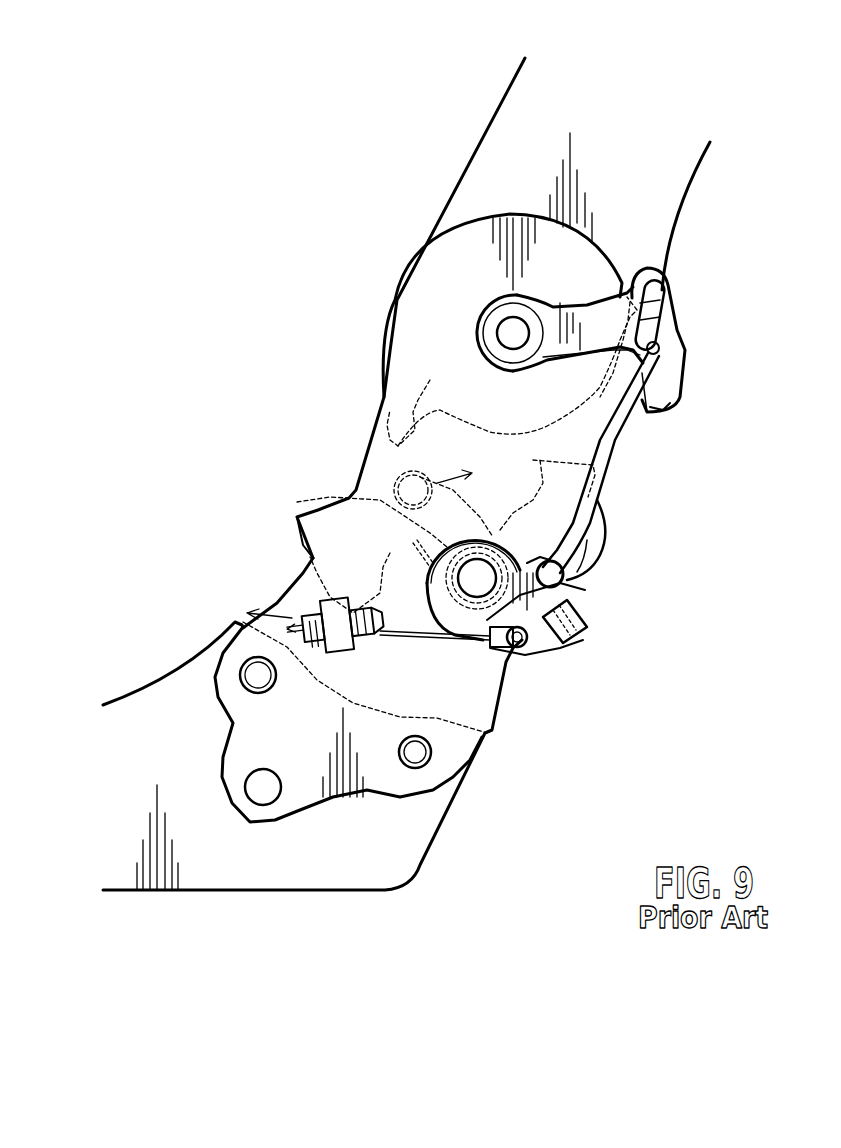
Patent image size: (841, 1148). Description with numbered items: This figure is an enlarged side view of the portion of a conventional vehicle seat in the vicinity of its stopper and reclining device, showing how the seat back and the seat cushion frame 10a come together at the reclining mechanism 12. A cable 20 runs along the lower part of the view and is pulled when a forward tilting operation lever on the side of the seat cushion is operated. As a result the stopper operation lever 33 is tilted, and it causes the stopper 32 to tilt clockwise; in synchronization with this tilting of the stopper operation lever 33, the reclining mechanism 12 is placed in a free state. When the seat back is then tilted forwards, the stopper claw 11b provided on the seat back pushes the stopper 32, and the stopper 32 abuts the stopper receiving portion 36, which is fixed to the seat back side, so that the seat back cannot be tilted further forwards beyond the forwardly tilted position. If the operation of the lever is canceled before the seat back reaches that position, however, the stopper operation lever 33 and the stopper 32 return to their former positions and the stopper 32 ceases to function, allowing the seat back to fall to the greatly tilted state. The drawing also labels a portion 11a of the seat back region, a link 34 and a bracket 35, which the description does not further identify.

The frame of the seat cushion 10a is at (413, 838).
The upper arm (seat back frame 11) 11a is at (487, 170).
The stopper claw 11b is at (512, 371).
The reclining mechanism 12 is at (560, 263).
The cable 20 is at (410, 636).
The stopper 32 is at (390, 483).
The stopper operation lever 33 is at (595, 622).
The rod 34 is at (604, 477).
The bracket 35 is at (597, 295).
The stopper receiving portion 36 is at (446, 550).